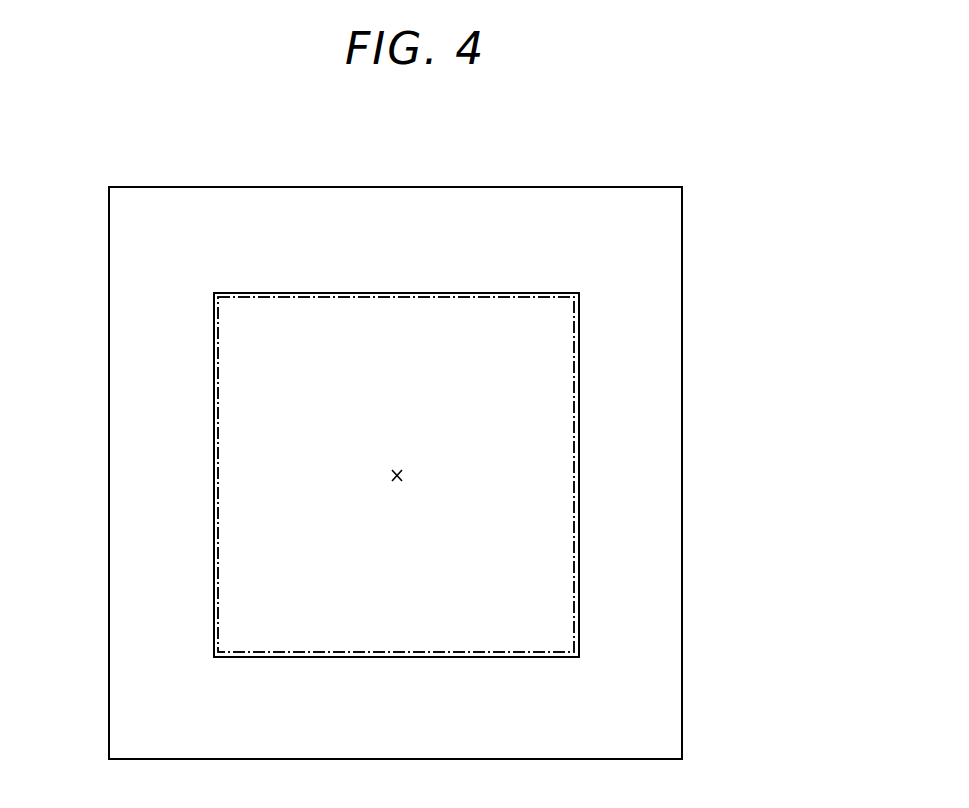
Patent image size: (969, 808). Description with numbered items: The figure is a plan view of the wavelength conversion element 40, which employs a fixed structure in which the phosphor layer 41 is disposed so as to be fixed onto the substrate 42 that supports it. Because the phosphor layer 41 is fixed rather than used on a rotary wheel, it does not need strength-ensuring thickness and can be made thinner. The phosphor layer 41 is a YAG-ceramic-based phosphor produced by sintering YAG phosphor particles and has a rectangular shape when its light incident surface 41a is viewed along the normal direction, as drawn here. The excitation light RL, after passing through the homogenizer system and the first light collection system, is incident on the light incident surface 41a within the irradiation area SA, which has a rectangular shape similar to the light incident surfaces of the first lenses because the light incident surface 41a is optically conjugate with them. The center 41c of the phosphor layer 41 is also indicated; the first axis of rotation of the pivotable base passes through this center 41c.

The wavelength conversion element 40 is at (705, 243).
The phosphor layer 41 is at (461, 293).
The light incident surface 41a is at (254, 358).
The center 41c is at (390, 474).
The substrate 42 is at (668, 436).
The irradiation area SA is at (576, 500).